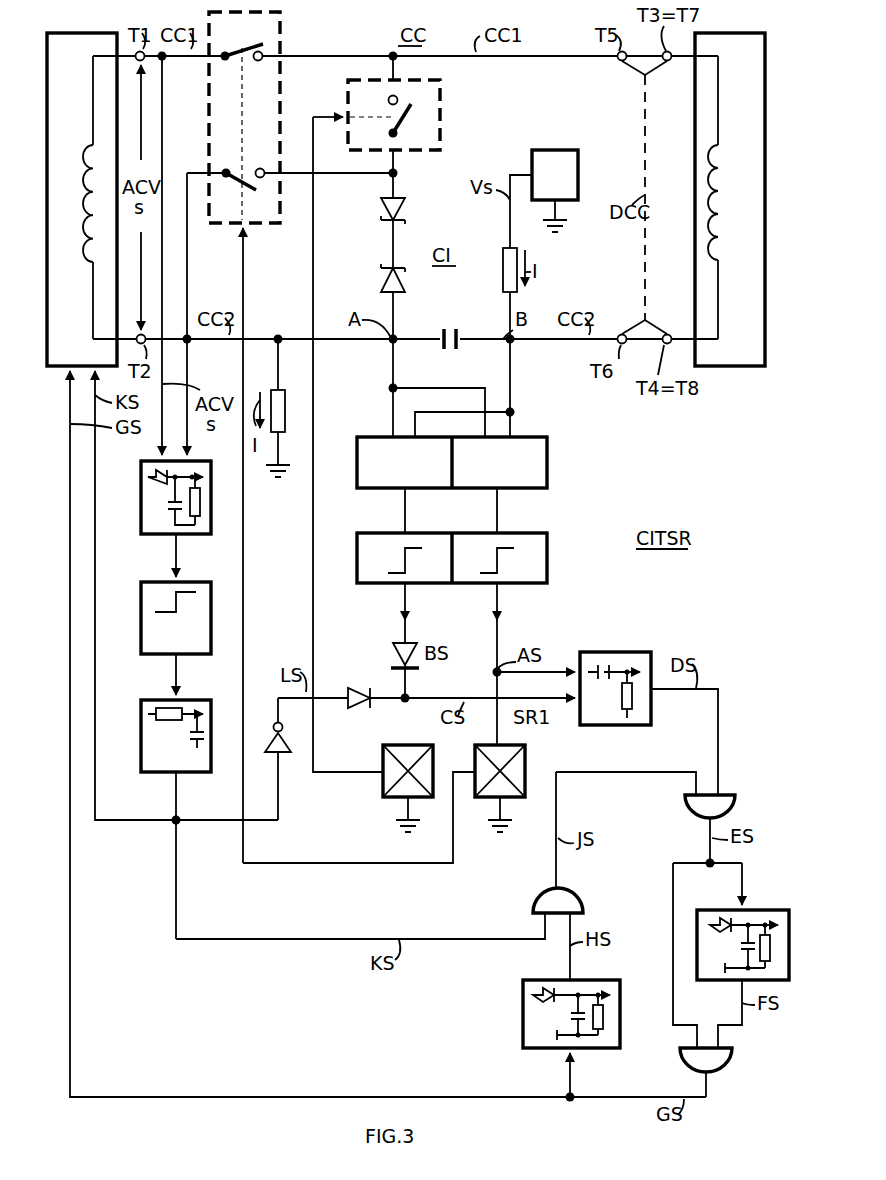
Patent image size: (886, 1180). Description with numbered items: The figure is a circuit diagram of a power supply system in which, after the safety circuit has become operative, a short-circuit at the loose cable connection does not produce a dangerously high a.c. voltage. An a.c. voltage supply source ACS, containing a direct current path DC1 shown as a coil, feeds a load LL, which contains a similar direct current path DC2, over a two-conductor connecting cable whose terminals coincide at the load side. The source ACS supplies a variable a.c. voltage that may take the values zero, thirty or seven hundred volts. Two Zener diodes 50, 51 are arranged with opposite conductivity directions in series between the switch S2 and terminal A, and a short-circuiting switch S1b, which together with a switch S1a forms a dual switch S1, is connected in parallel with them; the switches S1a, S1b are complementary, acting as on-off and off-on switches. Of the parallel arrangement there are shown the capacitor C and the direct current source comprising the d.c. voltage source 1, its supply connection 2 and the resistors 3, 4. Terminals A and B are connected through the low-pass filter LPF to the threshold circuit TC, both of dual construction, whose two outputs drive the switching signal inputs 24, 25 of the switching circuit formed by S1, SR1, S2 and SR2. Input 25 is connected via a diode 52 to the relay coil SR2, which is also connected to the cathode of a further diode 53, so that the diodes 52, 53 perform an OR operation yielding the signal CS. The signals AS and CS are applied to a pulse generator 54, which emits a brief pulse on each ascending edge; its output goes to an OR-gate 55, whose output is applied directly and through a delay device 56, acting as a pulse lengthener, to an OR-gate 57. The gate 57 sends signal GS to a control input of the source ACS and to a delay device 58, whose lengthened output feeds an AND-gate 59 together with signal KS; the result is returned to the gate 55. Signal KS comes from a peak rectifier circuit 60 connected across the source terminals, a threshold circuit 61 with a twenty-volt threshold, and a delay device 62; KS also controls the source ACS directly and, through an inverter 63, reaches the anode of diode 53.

The d.c. voltage source 1 is at (562, 150).
The supply voltage line 2 is at (527, 174).
The resistor 3 is at (503, 272).
The resistor 4 is at (284, 410).
The switching signal input 24 is at (497, 630).
The switching signal input 25 is at (420, 622).
The Zener diode 50 is at (381, 210).
The Zener diode 51 is at (386, 294).
The diode 52 is at (396, 655).
The further diode 53 is at (362, 708).
The pulse generator 54 is at (626, 652).
The OR-gate 55 is at (684, 808).
The delay device 56 is at (718, 909).
The OR-gate 57 is at (710, 1046).
The delay device 58 is at (523, 1005).
The AND-gate 59 is at (537, 890).
The peak rectifier circuit 60 is at (141, 505).
The threshold circuit 61 is at (141, 625).
The delay device 62 is at (141, 735).
The inverter 63 is at (292, 740).
The a.c. voltage supply source ACS is at (99, 33).
The load LL is at (730, 33).
The direct current path DC1 is at (84, 165).
The direct current path DC2 is at (728, 165).
The dual switch S1 is at (256, 136).
The switch S1a is at (280, 16).
The short-circuiting switch S1b is at (286, 218).
The switch S2 is at (442, 92).
The capacitor C is at (452, 330).
The low-pass filter LPF is at (549, 466).
The threshold circuit TC is at (549, 560).
The relay coil SR1 is at (534, 732).
The relay coil SR2 is at (380, 790).